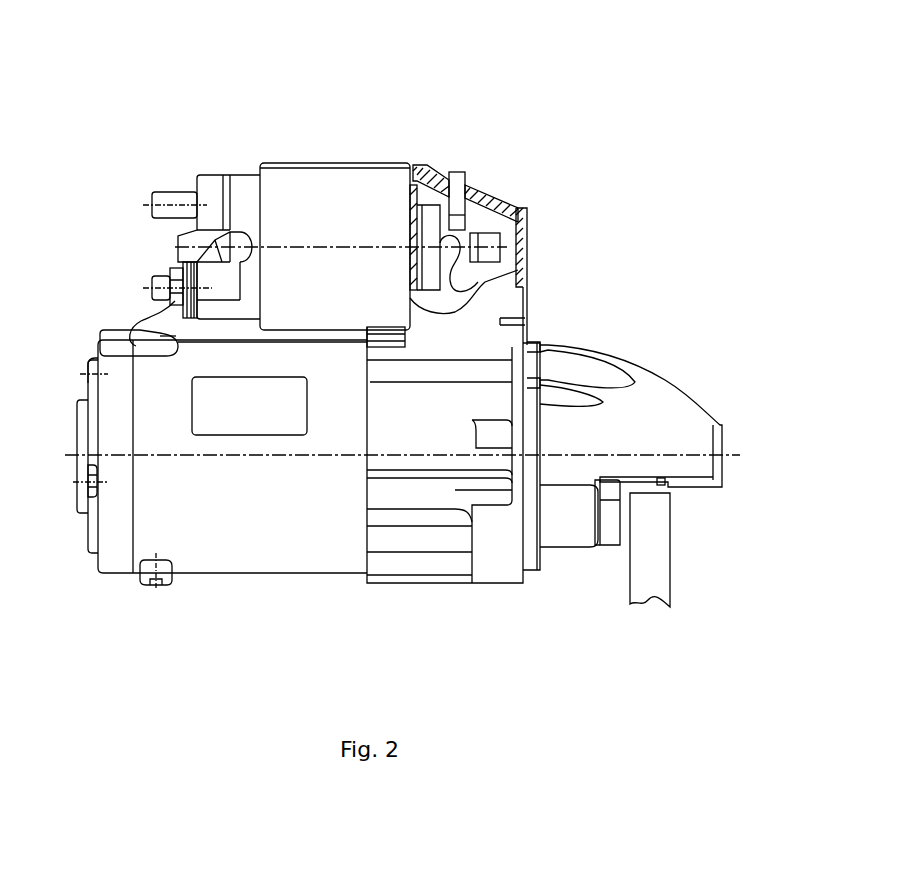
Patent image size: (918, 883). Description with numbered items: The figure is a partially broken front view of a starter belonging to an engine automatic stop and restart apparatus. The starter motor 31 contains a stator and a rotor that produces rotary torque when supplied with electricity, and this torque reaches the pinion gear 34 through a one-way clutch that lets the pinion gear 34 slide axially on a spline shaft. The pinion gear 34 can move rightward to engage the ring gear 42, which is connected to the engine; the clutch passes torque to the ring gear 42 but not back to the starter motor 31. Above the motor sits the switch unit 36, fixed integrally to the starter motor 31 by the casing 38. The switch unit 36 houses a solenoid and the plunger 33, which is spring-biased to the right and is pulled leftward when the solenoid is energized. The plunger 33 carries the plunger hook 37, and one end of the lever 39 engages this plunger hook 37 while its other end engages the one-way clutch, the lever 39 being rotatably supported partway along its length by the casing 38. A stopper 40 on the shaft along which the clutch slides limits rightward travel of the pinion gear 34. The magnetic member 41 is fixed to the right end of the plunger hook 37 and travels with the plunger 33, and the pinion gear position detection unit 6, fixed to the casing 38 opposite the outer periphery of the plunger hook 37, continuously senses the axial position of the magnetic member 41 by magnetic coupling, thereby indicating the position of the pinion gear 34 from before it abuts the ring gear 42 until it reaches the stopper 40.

The starter motor 31 is at (263, 537).
The switch unit 36 is at (350, 160).
The plunger 33 is at (432, 222).
The pinion gear position detection unit 6 is at (461, 172).
The magnetic member 41 is at (485, 180).
The plunger hook 37 is at (480, 183).
The lever 39 is at (541, 197).
The casing 38 is at (415, 563).
The pinion gear 34 is at (608, 495).
The ring gear 42 is at (655, 553).
The stopper 40 is at (660, 481).